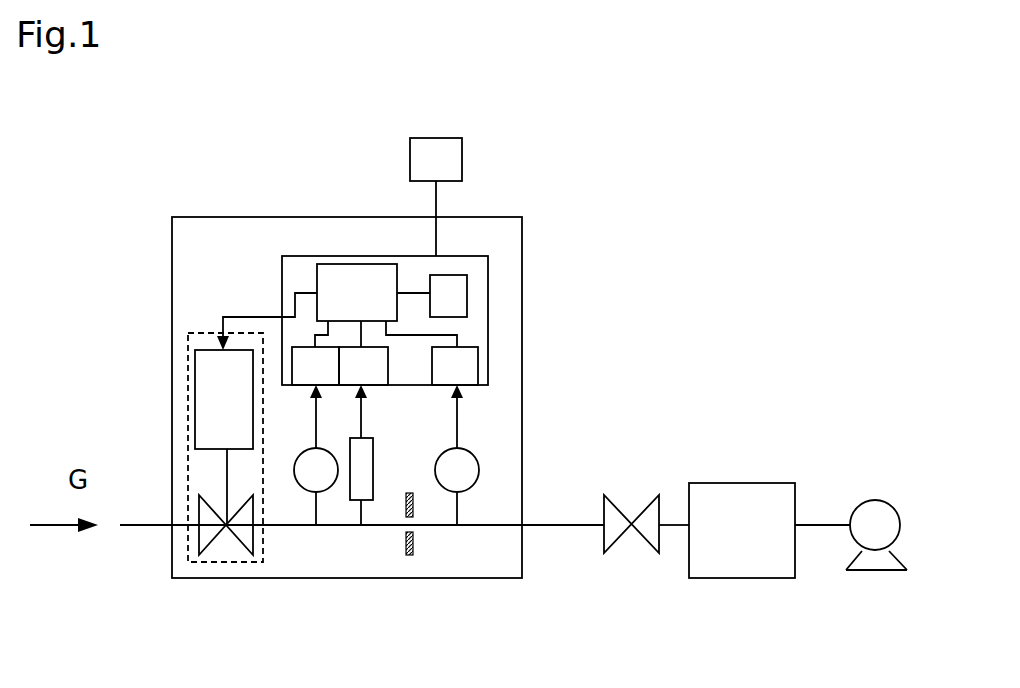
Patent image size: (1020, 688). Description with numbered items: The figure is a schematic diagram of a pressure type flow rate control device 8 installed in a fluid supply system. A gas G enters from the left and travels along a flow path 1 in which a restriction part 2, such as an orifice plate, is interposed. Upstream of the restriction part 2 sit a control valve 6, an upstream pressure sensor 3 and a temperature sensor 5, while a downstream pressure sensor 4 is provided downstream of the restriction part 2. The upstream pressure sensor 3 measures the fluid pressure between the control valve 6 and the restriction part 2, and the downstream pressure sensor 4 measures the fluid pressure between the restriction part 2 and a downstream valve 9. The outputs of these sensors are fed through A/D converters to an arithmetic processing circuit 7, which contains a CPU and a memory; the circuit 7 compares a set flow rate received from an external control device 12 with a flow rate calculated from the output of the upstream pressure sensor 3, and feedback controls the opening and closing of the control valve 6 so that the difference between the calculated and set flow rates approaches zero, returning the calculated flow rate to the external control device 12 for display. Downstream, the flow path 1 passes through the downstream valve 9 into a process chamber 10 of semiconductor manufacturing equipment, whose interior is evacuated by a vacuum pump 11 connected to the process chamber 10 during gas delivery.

The flow path 1 is at (487, 527).
The restriction part 2 is at (408, 557).
The upstream pressure sensor 3 is at (305, 485).
The downstream pressure sensor 4 is at (470, 463).
The temperature sensor 5 is at (347, 500).
The control valve 6 is at (188, 432).
The arithmetic processing circuit 7 is at (488, 312).
The flow rate control device 8 is at (535, 256).
The downstream valve 9 is at (640, 478).
The process chamber 10 is at (783, 480).
The vacuum pump 11 is at (880, 573).
The external control device 12 is at (417, 162).